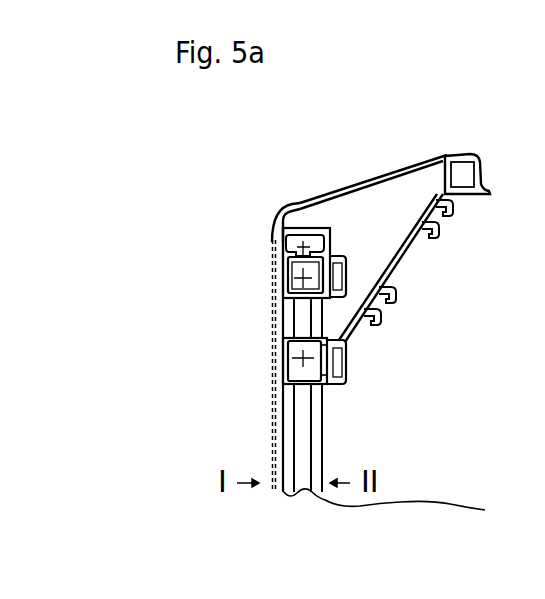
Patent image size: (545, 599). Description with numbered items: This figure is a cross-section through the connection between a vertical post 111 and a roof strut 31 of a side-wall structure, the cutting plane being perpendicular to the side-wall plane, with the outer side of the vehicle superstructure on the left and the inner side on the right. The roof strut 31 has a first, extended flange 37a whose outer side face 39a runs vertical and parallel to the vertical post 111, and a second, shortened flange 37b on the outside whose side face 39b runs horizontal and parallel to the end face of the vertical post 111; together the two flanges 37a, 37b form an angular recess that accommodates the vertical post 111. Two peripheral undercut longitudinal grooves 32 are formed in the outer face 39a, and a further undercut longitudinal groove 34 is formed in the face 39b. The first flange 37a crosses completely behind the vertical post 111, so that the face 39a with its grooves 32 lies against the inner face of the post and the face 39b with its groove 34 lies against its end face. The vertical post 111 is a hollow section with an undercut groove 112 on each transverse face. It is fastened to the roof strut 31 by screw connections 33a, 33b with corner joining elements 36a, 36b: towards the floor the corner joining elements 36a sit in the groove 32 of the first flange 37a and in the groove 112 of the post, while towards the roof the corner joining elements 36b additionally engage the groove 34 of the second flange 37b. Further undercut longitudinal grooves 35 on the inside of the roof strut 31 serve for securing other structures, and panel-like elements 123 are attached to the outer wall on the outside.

The roof strut 31 is at (420, 252).
The undercut longitudinal grooves 32 is at (352, 357).
The screw connections 33a is at (288, 366).
The screw connections 33b is at (290, 270).
The undercut longitudinal groove 34 is at (308, 218).
The further undercut longitudinal grooves 35 is at (453, 214).
The corner joining elements 36a is at (290, 388).
The corner joining elements 36b is at (287, 283).
The first flange 37a is at (355, 308).
The second flange 37b is at (313, 210).
The outer side face 39a is at (326, 332).
The side face 39b is at (288, 238).
The vertical post 111 is at (411, 512).
The undercut groove 112 is at (303, 446).
The panel-like elements 123 is at (272, 447).